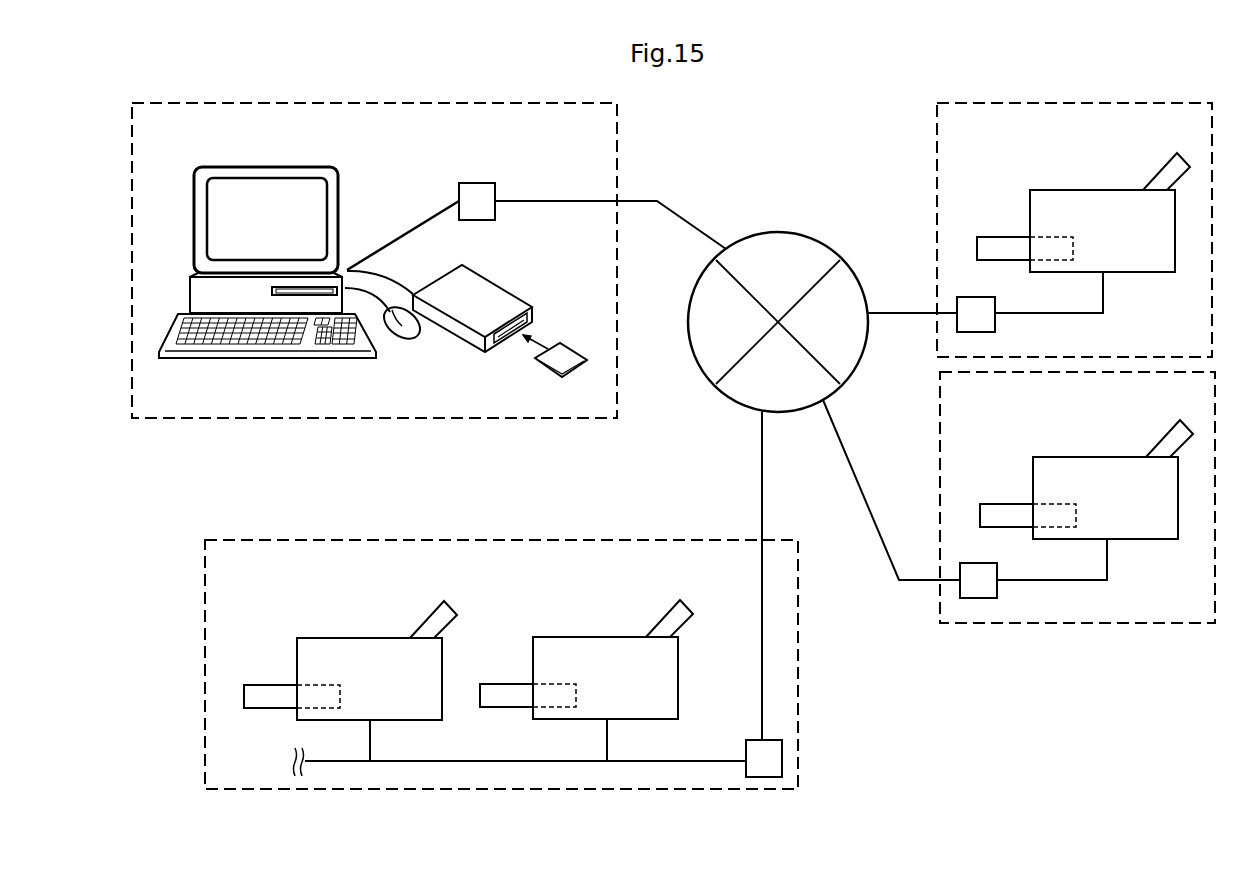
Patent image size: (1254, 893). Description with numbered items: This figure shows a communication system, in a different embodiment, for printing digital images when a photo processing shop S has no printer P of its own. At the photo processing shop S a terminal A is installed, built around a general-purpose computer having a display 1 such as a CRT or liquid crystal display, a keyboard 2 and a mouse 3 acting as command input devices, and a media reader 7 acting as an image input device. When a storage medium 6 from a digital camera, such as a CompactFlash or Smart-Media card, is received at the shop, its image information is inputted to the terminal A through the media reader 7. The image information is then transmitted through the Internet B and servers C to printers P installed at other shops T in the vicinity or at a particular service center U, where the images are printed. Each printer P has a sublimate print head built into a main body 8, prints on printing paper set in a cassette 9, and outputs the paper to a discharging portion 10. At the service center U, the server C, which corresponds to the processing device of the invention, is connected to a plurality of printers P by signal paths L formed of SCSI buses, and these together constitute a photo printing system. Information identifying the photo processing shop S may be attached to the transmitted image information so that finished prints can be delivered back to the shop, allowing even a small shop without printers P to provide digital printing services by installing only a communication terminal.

The display 1 is at (278, 167).
The keyboard 2 is at (258, 358).
The mouse 3 is at (418, 330).
The storage medium 6 is at (553, 355).
The media reader 7 is at (502, 298).
The main body 8 is at (1068, 190).
The cassette 9 is at (1000, 235).
The discharging portion 10 is at (1165, 172).
The terminal A is at (372, 193).
The photo processing shop S is at (617, 140).
The Internet B is at (802, 232).
The other shops T is at (937, 202).
The service center U is at (798, 668).
The server C is at (990, 325).
The signal path L is at (372, 738).
The printer P is at (708, 414).